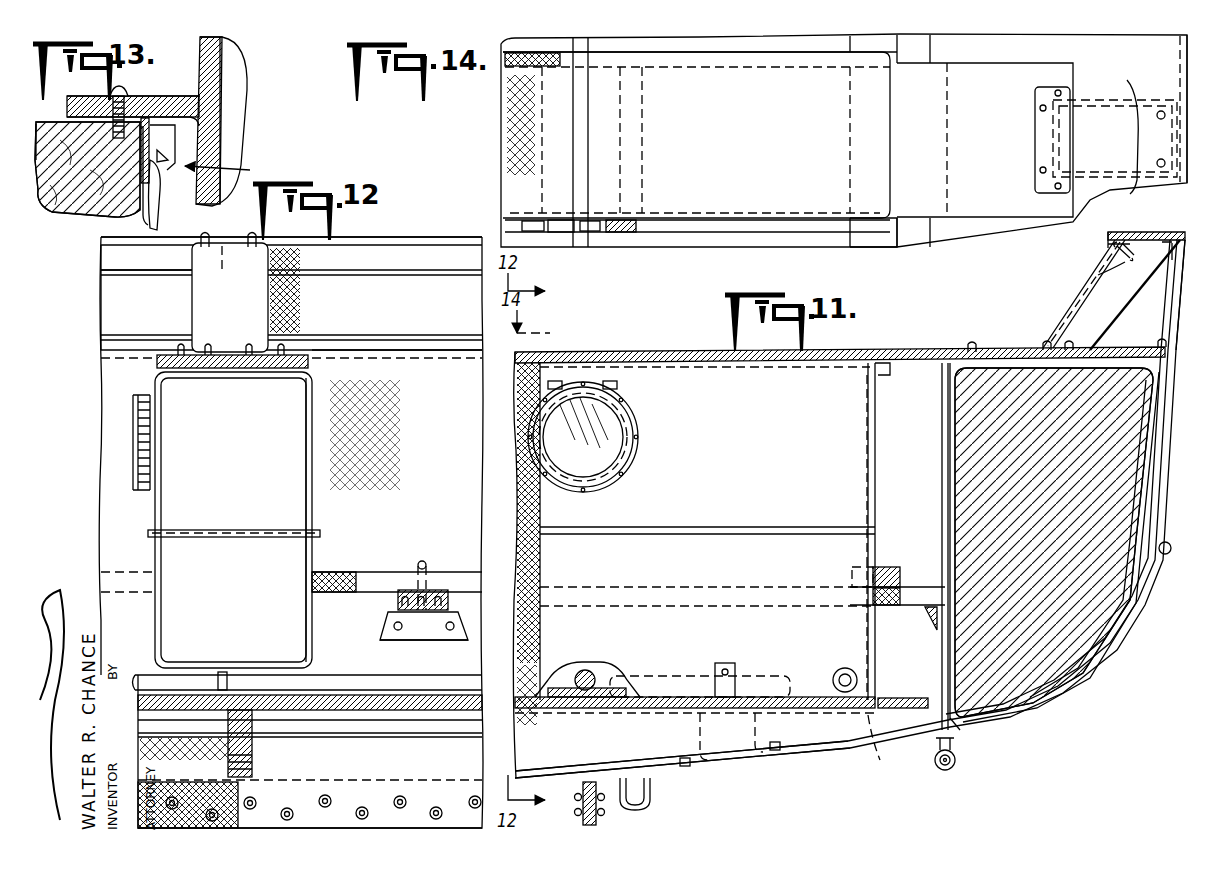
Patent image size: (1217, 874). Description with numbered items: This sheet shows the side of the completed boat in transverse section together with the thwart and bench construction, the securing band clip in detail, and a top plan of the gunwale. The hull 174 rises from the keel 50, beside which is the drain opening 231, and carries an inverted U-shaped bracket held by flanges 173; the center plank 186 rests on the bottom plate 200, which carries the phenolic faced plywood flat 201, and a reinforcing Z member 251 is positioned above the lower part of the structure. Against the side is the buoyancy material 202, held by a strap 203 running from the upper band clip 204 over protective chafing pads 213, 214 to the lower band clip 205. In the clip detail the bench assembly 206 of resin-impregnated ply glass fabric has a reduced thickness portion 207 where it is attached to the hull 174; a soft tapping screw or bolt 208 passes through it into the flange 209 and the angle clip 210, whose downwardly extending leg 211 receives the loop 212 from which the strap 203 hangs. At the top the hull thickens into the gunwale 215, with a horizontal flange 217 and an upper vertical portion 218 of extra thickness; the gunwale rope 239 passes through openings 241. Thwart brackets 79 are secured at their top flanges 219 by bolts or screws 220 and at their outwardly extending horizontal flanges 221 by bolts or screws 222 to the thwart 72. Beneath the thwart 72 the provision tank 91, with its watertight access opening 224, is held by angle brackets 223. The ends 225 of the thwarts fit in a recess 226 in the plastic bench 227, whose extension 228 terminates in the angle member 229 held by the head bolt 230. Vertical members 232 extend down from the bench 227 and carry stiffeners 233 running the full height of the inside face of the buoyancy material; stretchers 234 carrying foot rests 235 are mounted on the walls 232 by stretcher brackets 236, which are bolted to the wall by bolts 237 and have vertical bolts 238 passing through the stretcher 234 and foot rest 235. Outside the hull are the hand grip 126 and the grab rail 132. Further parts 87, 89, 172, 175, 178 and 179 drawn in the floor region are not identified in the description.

In FIG. 11, the keel 50 is at (597, 818).
In FIG. 14, the thwart 72 is at (932, 80).
In FIG. 12, the thwart 72 is at (296, 352).
In FIG. 11, the thwart 72 is at (668, 352).
In FIG. 14, the thwart brackets 79 is at (1085, 115).
In FIG. 12, the thwart brackets 79 is at (200, 305).
In FIG. 11, the thwart brackets 79 is at (1108, 298).
In FIG. 11, the bracket 87 is at (586, 670).
In FIG. 11, the bar 89 is at (646, 676).
In FIG. 12, the provision tank 91 is at (312, 462).
In FIG. 11, the hand grip 126 is at (1160, 542).
In FIG. 11, the grab rail 132 is at (945, 772).
In FIG. 11, the hanger 172 is at (700, 728).
In FIG. 11, the flanges 173 is at (672, 760).
In FIG. 13, the hull 174 is at (222, 100).
In FIG. 12, the hull 174 is at (405, 768).
In FIG. 11, the hull 174 is at (740, 768).
In FIG. 11, the hanger strap 175 is at (800, 695).
In FIG. 11, the block 178 is at (716, 666).
In FIG. 11, the bar end 179 is at (758, 676).
In FIG. 14, the center plank 186 is at (605, 248).
In FIG. 12, the center plank 186 is at (378, 707).
In FIG. 11, the center plank 186 is at (582, 710).
In FIG. 11, the bottom plate 200 is at (880, 752).
In FIG. 11, the phenolic faced plywood flat 201 is at (905, 696).
In FIG. 11, the buoyancy material 202 is at (1068, 462).
In FIG. 13, the strap 203 is at (115, 214).
In FIG. 11, the strap 203 is at (1146, 480).
In FIG. 13, the upper band clip 204 is at (233, 168).
In FIG. 11, the upper band clip 204 is at (1054, 542).
In FIG. 11, the lower band clip 205 is at (972, 733).
In FIG. 13, the bench assembly 206 is at (132, 96).
In FIG. 13, the reduced thickness portion 207 is at (226, 43).
In FIG. 13, the soft tapping screw or bolt 208 is at (112, 90).
In FIG. 13, the flange 209 is at (87, 169).
In FIG. 13, the angle clip 210 is at (177, 138).
In FIG. 13, the downwardly extending leg 211 is at (143, 176).
In FIG. 13, the loop 212 is at (158, 170).
In FIG. 11, the protective chafing pad 213 is at (1120, 616).
In FIG. 11, the protective chafing pad 214 is at (1076, 686).
In FIG. 11, the gunwale 215 is at (1160, 220).
In FIG. 14, the horizontal flange 217 is at (1155, 50).
In FIG. 12, the horizontal flange 217 is at (392, 237).
In FIG. 11, the horizontal flange 217 is at (1153, 233).
In FIG. 12, the upper vertical portion 218 is at (447, 262).
In FIG. 11, the upper vertical portion 218 is at (1166, 295).
In FIG. 12, the top flanges 219 is at (230, 293).
In FIG. 11, the top flanges 219 is at (1108, 242).
In FIG. 14, the bolts or screws 220 is at (1157, 117).
In FIG. 14, the outwardly extending horizontal flanges 221 is at (1038, 145).
In FIG. 12, the outwardly extending horizontal flanges 221 is at (264, 348).
In FIG. 11, the outwardly extending horizontal flanges 221 is at (1084, 294).
In FIG. 14, the bolts or screws 222 is at (1040, 108).
In FIG. 11, the bolts or screws 222 is at (1060, 348).
In FIG. 11, the angle brackets 223 is at (884, 377).
In FIG. 12, the watertight access opening 224 is at (127, 457).
In FIG. 11, the watertight access opening 224 is at (632, 460).
In FIG. 11, the ends of the thwarts 225 is at (996, 350).
In FIG. 11, the recess 226 is at (1010, 394).
In FIG. 12, the plastic bench 227 is at (398, 348).
In FIG. 11, the plastic bench 227 is at (1077, 394).
In FIG. 11, the extension 228 is at (1127, 340).
In FIG. 11, the angle member 229 is at (1157, 330).
In FIG. 11, the head bolt 230 is at (1163, 309).
In FIG. 11, the drain opening 231 is at (652, 805).
In FIG. 11, the vertical members 232 is at (947, 468).
In FIG. 11, the stiffeners 233 is at (940, 535).
In FIG. 12, the stretchers 234 is at (455, 590).
In FIG. 11, the stretchers 234 is at (893, 605).
In FIG. 14, the foot rests 235 is at (878, 250).
In FIG. 12, the foot rests 235 is at (348, 572).
In FIG. 11, the foot rests 235 is at (882, 568).
In FIG. 12, the stretcher brackets 236 is at (388, 616).
In FIG. 11, the stretcher brackets 236 is at (928, 622).
In FIG. 12, the bolts 237 is at (400, 634).
In FIG. 12, the vertical bolts 238 is at (422, 560).
In FIG. 14, the gunwale rope 239 is at (1130, 192).
In FIG. 11, the gunwale rope 239 is at (1114, 248).
In FIG. 11, the openings 241 is at (1098, 274).
In FIG. 12, the reinforcing Z member 251 is at (253, 756).